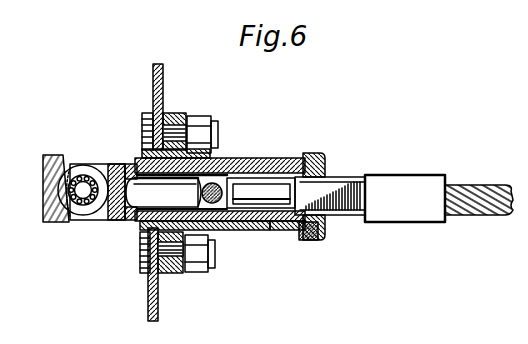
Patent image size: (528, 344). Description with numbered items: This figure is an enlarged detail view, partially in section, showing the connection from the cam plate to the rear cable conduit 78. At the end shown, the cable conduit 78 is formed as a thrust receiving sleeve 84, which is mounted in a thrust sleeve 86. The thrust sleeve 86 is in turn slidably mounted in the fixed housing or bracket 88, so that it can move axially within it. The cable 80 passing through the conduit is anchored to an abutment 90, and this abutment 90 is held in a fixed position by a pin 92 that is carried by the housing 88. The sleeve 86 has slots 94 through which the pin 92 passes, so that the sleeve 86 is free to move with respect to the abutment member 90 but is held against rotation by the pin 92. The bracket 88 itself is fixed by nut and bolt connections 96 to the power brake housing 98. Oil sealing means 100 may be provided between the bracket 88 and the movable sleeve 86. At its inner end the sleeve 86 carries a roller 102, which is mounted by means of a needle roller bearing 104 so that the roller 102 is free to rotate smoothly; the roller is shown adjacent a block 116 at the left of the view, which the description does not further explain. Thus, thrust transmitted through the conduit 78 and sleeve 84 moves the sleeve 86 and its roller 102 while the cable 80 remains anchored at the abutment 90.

The cable conduit 78 is at (432, 220).
The cable 80 is at (297, 156).
The thrust receiving sleeve 84 is at (350, 216).
The thrust sleeve 86 is at (250, 231).
The fixed housing or bracket 88 is at (288, 230).
The abutment 90 is at (243, 168).
The pin 92 is at (214, 184).
The slots 94 is at (147, 191).
The nut and bolt connections 96 is at (170, 128).
The power brake housing 98 is at (147, 296).
The oil sealing means 100 is at (319, 232).
The roller 102 is at (97, 178).
The needle roller bearing 104 is at (84, 188).
The support block 116 is at (53, 154).